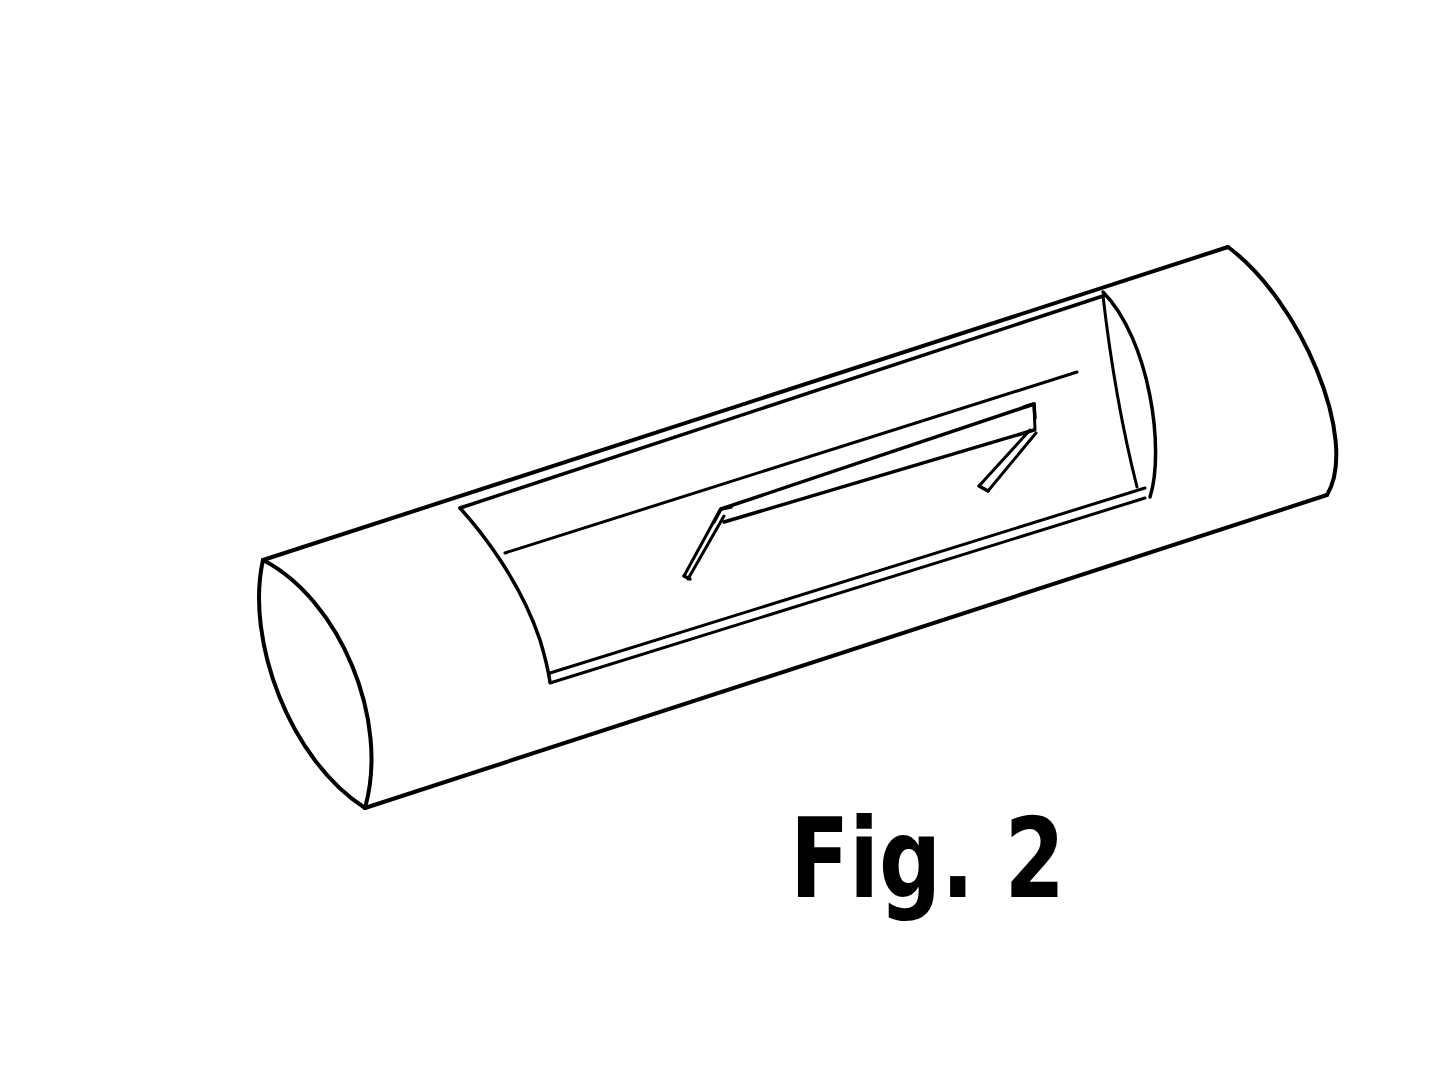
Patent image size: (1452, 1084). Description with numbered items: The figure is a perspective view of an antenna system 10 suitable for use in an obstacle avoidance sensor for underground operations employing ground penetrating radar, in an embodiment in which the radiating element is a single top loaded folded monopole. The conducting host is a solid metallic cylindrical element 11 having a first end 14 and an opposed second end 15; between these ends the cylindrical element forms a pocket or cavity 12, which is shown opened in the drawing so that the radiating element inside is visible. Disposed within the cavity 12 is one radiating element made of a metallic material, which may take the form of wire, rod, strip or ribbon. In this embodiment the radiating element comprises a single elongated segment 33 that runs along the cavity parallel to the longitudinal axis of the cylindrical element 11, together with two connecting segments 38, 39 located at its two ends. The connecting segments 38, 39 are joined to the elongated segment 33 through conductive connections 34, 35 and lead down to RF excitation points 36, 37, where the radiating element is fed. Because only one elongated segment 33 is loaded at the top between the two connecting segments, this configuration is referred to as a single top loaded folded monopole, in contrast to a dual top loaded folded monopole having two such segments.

The antenna system 10 is at (1037, 238).
The solid metallic cylindrical element 11 is at (353, 527).
The cavity 12 is at (1103, 482).
The first end 14 is at (258, 603).
The second end 15 is at (1330, 398).
The elongated segment 33 is at (826, 470).
The conductive connection 34 is at (718, 511).
The conductive connection 35 is at (1033, 402).
The RF excitation point 36 is at (688, 577).
The RF excitation point 37 is at (993, 493).
The connecting segment 38 is at (693, 548).
The connecting segment 39 is at (1033, 458).